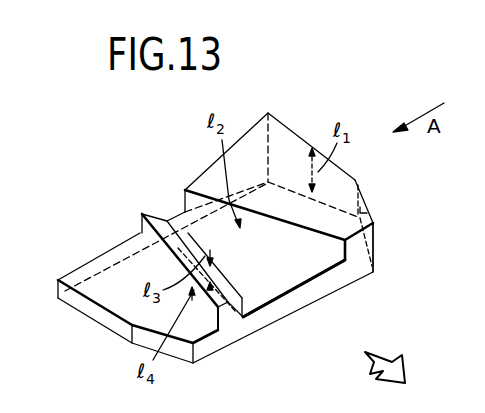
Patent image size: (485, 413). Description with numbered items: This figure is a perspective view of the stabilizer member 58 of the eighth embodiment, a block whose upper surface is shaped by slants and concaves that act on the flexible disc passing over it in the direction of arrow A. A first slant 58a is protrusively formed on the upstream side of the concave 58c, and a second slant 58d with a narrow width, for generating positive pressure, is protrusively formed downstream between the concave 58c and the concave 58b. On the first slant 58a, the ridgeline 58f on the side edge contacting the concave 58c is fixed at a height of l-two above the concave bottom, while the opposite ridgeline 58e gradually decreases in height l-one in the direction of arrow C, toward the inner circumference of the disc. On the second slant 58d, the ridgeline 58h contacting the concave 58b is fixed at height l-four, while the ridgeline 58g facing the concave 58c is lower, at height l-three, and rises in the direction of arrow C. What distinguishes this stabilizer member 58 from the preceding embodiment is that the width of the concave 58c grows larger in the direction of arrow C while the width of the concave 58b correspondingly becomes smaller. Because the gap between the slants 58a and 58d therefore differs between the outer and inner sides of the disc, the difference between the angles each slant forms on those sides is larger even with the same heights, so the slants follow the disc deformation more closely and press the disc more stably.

The stabilizer member 58 is at (145, 193).
The first slant 58a is at (332, 185).
The concave 58b is at (87, 281).
The concave 58c is at (317, 267).
The second slant 58d is at (142, 215).
The ridgeline 58e is at (357, 179).
The ridgeline 58f is at (335, 240).
The ridgeline 58g is at (187, 233).
The ridgeline 58h is at (215, 310).